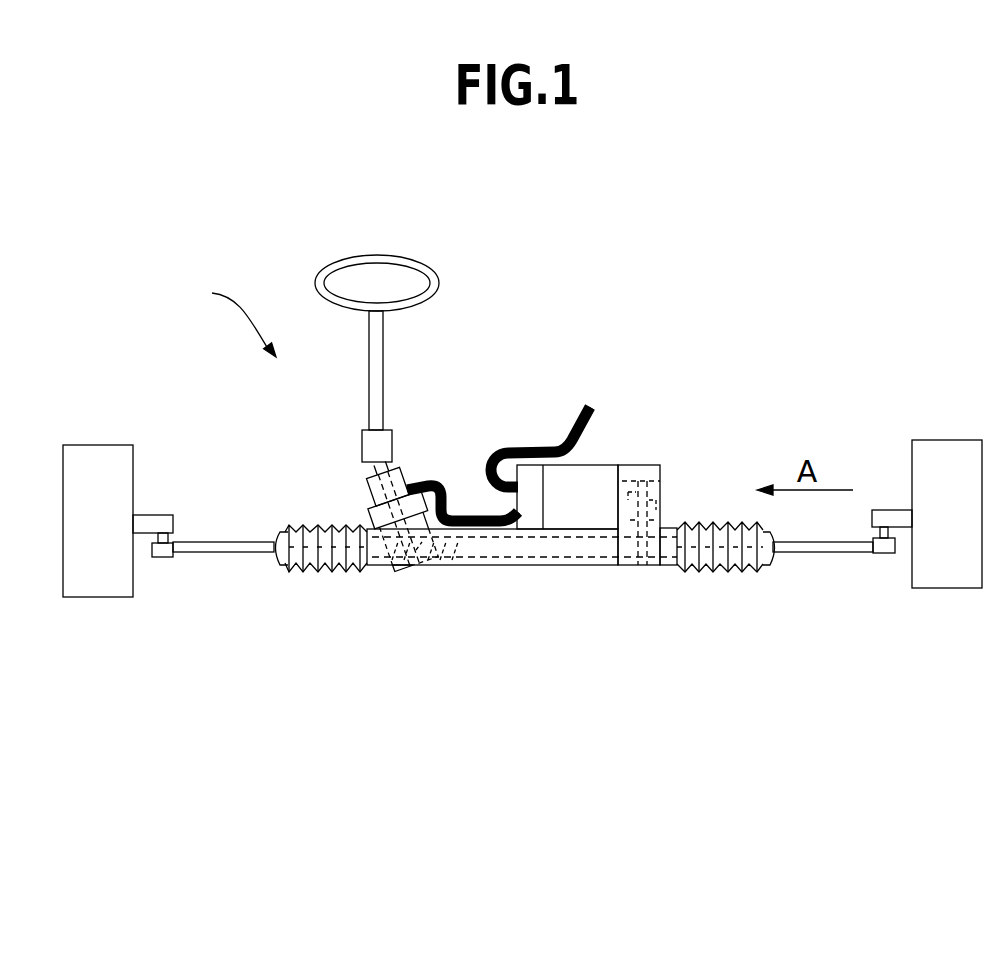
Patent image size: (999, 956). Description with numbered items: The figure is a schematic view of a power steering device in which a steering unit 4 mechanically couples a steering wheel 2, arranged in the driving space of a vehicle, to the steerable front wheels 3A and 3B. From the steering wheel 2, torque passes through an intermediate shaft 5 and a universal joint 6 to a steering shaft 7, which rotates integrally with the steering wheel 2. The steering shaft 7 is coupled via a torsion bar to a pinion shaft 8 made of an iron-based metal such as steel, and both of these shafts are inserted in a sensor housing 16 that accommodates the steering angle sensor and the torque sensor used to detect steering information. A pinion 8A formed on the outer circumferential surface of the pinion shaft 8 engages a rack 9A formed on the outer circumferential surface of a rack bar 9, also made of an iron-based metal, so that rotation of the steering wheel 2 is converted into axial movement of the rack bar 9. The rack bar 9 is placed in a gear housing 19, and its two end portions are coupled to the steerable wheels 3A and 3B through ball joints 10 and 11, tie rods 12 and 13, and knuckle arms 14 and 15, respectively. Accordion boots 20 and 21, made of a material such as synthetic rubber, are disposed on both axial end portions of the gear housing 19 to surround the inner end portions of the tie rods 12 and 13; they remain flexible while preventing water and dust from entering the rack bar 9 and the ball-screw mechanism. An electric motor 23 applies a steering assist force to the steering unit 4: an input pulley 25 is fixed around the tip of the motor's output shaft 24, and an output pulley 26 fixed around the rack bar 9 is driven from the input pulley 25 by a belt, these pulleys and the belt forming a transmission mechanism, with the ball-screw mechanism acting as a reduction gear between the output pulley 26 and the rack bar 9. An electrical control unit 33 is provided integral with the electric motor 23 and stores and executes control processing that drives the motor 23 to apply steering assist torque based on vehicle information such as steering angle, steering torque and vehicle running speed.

The steering wheel 2 is at (401, 258).
The steerable front wheel 3A is at (90, 465).
The steerable front wheel 3B is at (955, 445).
The steering unit 4 is at (232, 316).
The intermediate shaft 5 is at (376, 341).
The universal joint 6 is at (366, 444).
The steering shaft 7 is at (398, 465).
The pinion shaft 8 is at (443, 482).
The pinion 8A is at (410, 580).
The rack bar 9 is at (582, 566).
The rack 9A is at (465, 572).
The ball joint 10 is at (280, 573).
The ball joint 11 is at (770, 568).
The tie rod 12 is at (202, 560).
The tie rod 13 is at (832, 553).
The knuckle arm 14 is at (153, 515).
The knuckle arm 15 is at (888, 510).
The sensor housing 16 is at (370, 498).
The gear housing 19 is at (513, 566).
The accordion boot 20 is at (318, 572).
The accordion boot 21 is at (718, 575).
The electric motor 23 is at (590, 470).
The output shaft 24 is at (630, 472).
The input pulley 25 is at (660, 466).
The output pulley 26 is at (652, 567).
The electrical control unit 33 is at (530, 475).